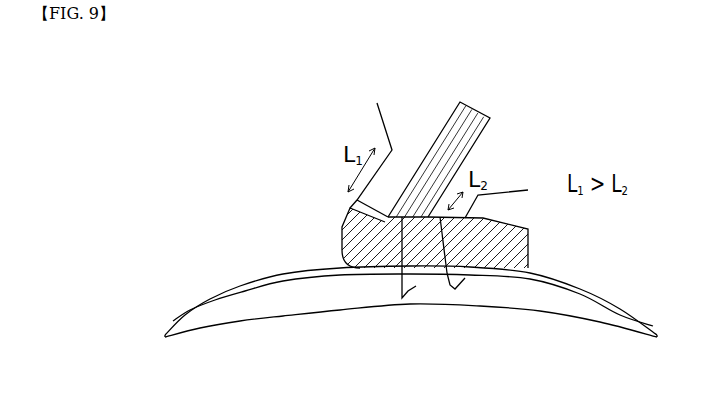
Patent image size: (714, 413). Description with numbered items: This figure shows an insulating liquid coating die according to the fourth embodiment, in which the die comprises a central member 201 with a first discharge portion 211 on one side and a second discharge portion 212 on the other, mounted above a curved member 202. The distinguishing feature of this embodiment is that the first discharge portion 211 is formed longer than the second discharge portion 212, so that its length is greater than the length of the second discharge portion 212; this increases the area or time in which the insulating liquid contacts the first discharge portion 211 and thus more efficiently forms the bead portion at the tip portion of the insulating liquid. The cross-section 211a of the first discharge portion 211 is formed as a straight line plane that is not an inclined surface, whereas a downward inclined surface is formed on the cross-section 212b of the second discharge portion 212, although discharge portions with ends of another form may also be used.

The shaft 201 is at (460, 143).
The first discharge portion 211 is at (370, 187).
The cross-section 211a is at (345, 223).
The second discharge portion 212 is at (490, 217).
The cross-section (downward inclined surface) 212b is at (465, 278).
The blade 202 is at (416, 286).